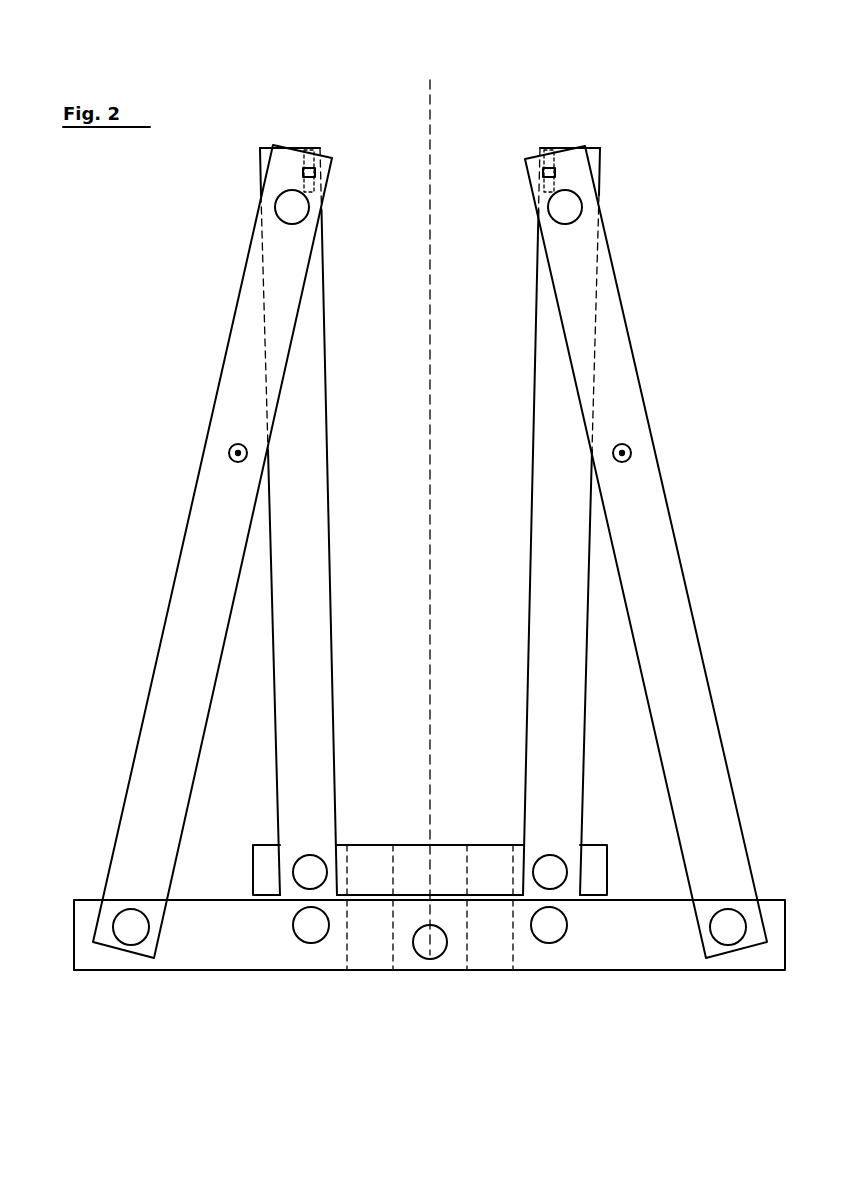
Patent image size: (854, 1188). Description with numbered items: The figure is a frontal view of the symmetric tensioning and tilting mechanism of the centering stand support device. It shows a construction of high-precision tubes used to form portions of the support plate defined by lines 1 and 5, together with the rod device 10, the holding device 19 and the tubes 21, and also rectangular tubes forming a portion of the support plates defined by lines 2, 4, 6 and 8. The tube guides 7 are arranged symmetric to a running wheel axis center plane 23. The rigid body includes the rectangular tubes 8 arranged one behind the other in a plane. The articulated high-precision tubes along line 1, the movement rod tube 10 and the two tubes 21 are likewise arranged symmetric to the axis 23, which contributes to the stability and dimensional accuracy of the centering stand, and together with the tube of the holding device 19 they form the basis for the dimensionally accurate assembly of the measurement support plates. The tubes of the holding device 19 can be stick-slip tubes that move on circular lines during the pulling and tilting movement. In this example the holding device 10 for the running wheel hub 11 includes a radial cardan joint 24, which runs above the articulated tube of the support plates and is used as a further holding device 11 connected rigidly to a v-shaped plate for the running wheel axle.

The articulated high-precision tube line 1 is at (131, 930).
The rectangular tube support plate line 2 is at (143, 779).
The rectangular tube support plate line 4 is at (288, 752).
The high-precision tube support plate line 5 is at (552, 868).
The rectangular tube support plate line 6 is at (598, 870).
The tube guides 7 is at (369, 850).
The rectangular tubes 8 is at (633, 950).
The rod device 10 is at (432, 945).
The running wheel hub 11 is at (552, 153).
The holding device 19 is at (631, 452).
The tubes 21 is at (314, 930).
The running wheel axis center plane 23 is at (426, 107).
The radial cardan joint 24 is at (556, 175).